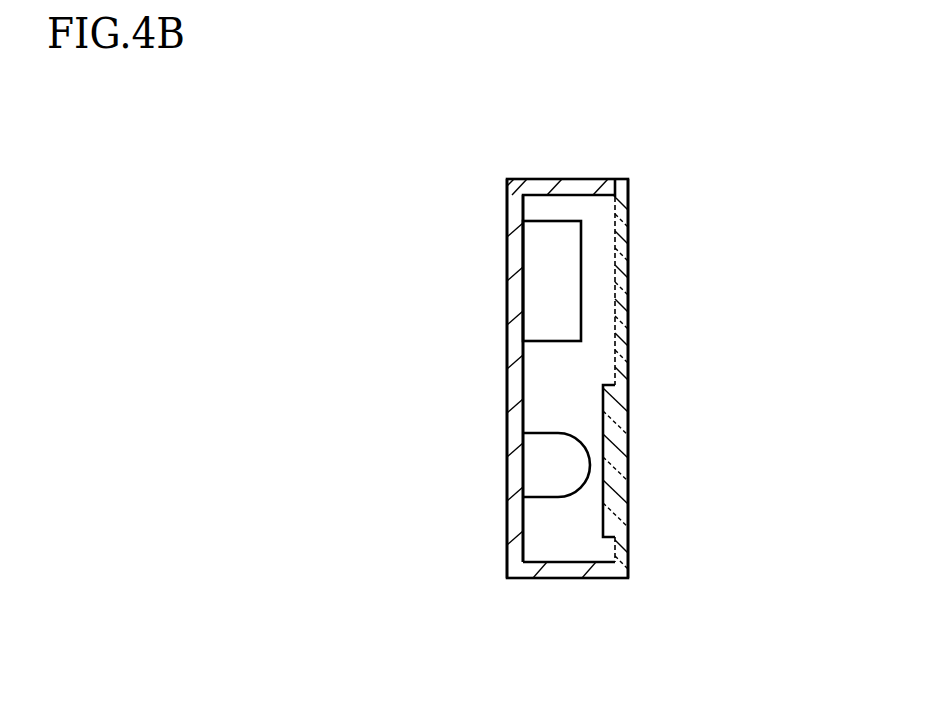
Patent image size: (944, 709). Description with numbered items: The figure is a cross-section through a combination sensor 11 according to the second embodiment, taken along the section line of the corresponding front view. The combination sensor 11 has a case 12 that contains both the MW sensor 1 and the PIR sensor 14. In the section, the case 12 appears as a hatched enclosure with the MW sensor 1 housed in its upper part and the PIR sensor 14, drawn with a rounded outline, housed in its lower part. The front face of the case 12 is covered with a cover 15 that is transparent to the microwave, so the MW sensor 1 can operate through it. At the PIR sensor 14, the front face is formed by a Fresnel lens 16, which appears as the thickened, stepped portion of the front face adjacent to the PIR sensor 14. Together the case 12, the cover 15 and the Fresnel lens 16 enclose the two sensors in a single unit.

The combination sensor 11 is at (453, 185).
The case 12 is at (507, 378).
The MW sensor 1 is at (581, 267).
The cover 15 is at (628, 312).
The PIR sensor 14 is at (578, 445).
The Fresnel lens 16 is at (628, 478).